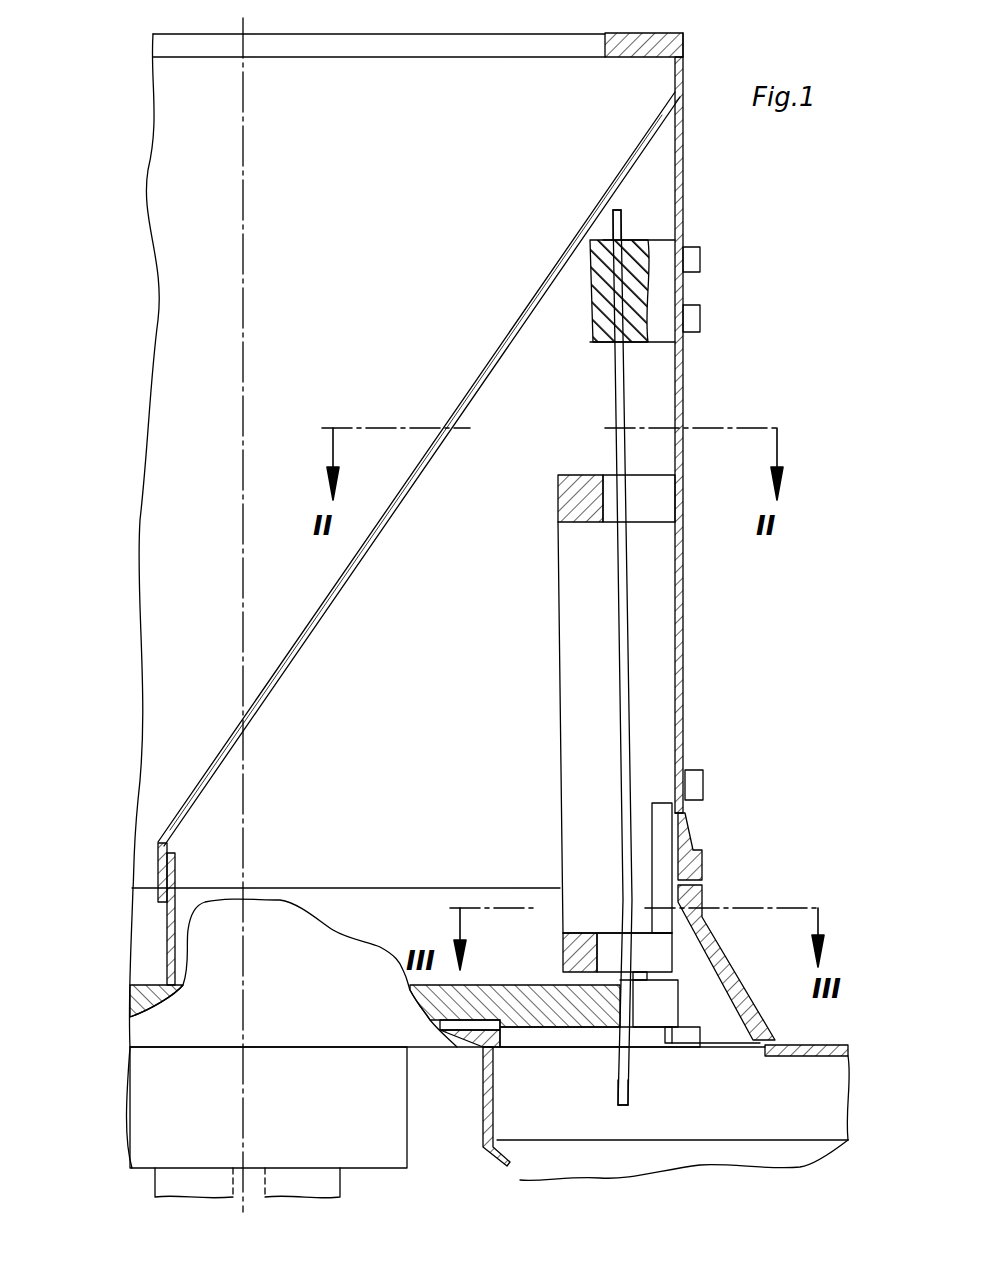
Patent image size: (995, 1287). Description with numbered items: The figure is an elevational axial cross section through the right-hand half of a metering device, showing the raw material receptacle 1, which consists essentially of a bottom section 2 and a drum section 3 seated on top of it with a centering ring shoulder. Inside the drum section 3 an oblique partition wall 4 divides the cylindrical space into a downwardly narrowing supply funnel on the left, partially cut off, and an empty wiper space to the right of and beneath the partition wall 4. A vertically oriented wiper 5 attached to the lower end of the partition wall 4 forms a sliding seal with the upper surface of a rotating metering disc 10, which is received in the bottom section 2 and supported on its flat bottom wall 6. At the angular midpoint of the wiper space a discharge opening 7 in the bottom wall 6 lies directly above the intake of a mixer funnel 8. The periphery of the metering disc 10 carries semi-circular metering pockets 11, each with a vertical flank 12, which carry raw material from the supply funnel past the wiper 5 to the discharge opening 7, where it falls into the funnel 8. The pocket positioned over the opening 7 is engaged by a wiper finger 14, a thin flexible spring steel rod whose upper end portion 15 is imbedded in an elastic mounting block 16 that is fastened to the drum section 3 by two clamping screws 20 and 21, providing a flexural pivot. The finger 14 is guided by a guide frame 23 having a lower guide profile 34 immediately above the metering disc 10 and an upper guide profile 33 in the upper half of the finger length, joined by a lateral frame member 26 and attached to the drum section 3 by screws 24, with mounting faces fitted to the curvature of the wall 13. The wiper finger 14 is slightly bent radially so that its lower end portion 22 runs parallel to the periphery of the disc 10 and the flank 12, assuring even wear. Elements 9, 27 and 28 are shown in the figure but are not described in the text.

The raw material receptacle 1 is at (690, 404).
The bottom section 2 is at (738, 992).
The drum section 3 is at (681, 582).
The oblique partition wall 4 is at (478, 378).
The wiper 5 is at (178, 876).
The bottom wall 6 is at (478, 1040).
The discharge opening 7 is at (575, 1037).
The mixer funnel 8 is at (805, 1154).
The vessel axis 9 is at (247, 821).
The metering disc 10 is at (530, 1005).
The metering pockets 11 is at (655, 1010).
The vertical flank 12 is at (627, 993).
The wall 13 is at (681, 710).
The wiper finger 14 is at (612, 405).
The upper end portion 15 is at (618, 226).
The elastic mounting block 16 is at (656, 335).
The clamping screw 20 is at (693, 262).
The clamping screw 21 is at (693, 322).
The lower wiper finger end portion 22 is at (624, 1078).
The guide frame 23 is at (556, 590).
The screws 24 is at (693, 786).
The lateral frame member 26 is at (606, 697).
The upper spacer block 27 is at (570, 475).
The lower spacer block 28 is at (573, 952).
The upper guide profile 33 is at (642, 503).
The lower guide profile 34 is at (607, 945).